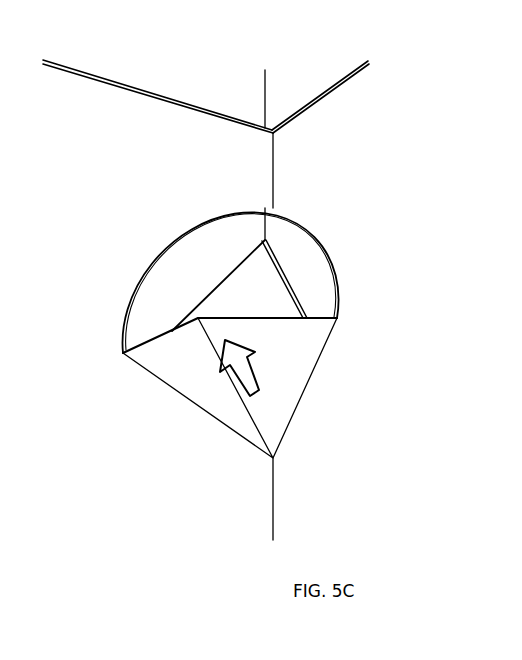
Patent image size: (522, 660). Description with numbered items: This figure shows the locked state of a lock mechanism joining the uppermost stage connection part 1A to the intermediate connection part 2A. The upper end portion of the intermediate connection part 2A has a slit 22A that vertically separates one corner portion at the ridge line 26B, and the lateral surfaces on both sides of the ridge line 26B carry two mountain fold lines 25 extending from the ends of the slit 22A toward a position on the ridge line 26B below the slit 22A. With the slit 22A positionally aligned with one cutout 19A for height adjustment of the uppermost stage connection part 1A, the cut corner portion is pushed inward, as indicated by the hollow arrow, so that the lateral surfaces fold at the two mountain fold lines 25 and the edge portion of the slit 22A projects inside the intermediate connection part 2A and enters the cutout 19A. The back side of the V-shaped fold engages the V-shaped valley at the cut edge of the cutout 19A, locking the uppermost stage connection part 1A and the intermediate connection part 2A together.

The uppermost stage connection part 1A is at (343, 47).
The intermediate connection part 2A is at (338, 149).
The ridge line 26B is at (273, 178).
The slit 22A is at (303, 233).
The cutout for height adjustment 19A is at (274, 287).
The mountain fold line 25 is at (322, 362).